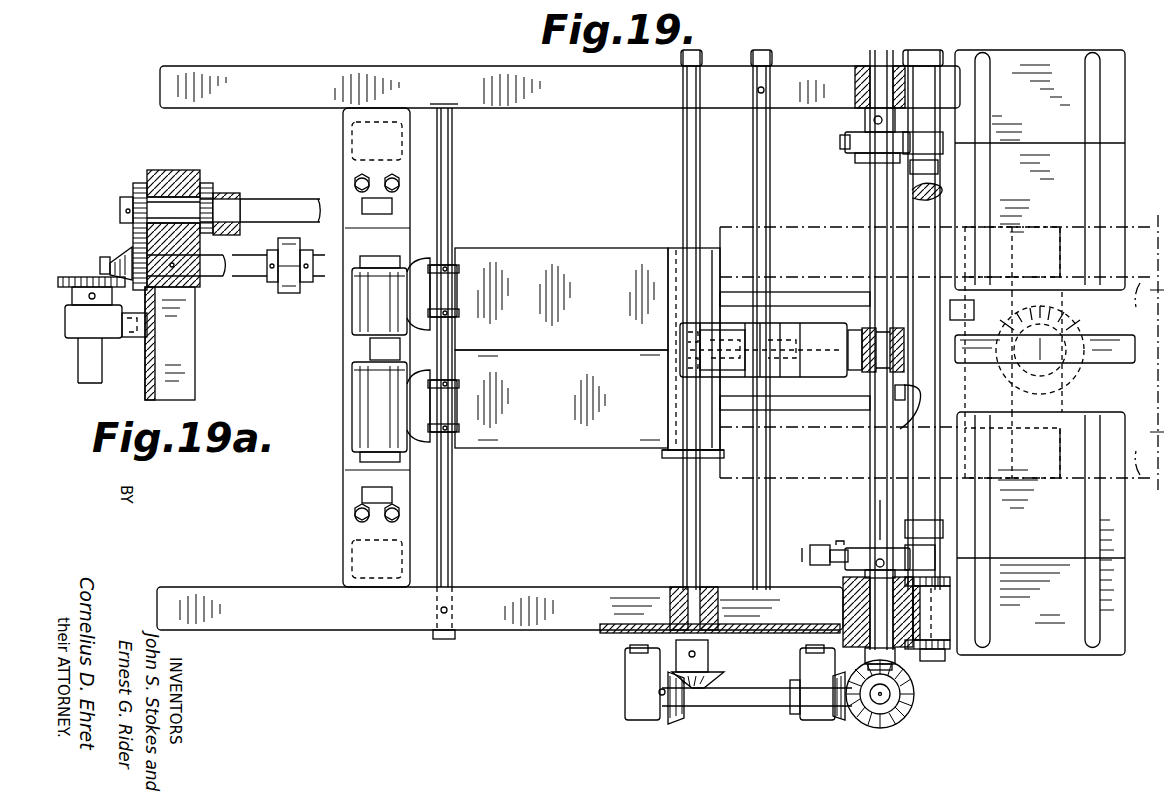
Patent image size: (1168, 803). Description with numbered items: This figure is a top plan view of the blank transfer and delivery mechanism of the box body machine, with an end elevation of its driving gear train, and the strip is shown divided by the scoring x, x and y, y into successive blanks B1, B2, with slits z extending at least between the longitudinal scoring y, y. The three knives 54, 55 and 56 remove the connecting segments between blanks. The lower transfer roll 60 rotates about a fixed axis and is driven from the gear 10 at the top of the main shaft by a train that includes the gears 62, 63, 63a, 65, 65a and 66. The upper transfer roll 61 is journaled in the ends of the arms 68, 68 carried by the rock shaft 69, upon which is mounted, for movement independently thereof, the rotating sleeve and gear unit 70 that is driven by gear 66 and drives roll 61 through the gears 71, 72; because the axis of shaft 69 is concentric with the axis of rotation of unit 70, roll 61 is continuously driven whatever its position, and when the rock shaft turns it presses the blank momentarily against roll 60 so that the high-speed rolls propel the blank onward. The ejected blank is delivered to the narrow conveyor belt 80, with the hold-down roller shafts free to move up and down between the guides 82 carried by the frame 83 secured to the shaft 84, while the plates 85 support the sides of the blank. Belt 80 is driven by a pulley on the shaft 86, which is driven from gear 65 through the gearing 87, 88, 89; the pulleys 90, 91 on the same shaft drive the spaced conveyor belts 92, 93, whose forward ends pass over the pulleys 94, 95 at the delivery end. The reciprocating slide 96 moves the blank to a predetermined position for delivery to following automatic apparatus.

In FIG. 19, the gear 10 is at (1080, 324).
In FIG. 19, the knife 54 is at (968, 252).
In FIG. 19, the knife 55 is at (1050, 228).
In FIG. 19, the knife 56 is at (1008, 274).
In FIG. 19, the lower transfer roll 60 is at (896, 452).
In FIG. 19, the upper transfer roll 61 is at (910, 190).
In FIG. 19, the gear 62 is at (1002, 328).
In FIG. 19, the gear 63 is at (894, 440).
In FIG. 19, the gear 63a is at (880, 438).
In FIG. 19, the gear 65 is at (912, 712).
In FIG. 19A, the gear 65 is at (80, 278).
In FIG. 19, the gear 65a is at (908, 684).
In FIG. 19A, the gear 65a is at (110, 254).
In FIG. 19A, the gear 66 is at (132, 224).
In FIG. 19, the arm 68 is at (860, 172).
In FIG. 19A, the arm 68 is at (242, 188).
In FIG. 19, the rock shaft 69 is at (880, 489).
In FIG. 19A, the rock shaft 69 is at (274, 206).
In FIG. 19, the rotating sleeve and gear unit 70 is at (838, 592).
In FIG. 19A, the rotating sleeve and gear unit 70 is at (146, 172).
In FIG. 19, the gear 71 is at (840, 572).
In FIG. 19A, the gear 71 is at (210, 188).
In FIG. 19, the gear 72 is at (985, 638).
In FIG. 19, the conveyor belt 80 is at (870, 368).
In FIG. 19A, the conveyor belt 80 is at (288, 292).
In FIG. 19, the guide 82 is at (807, 366).
In FIG. 19, the frame 83 is at (796, 334).
In FIG. 19, the shaft 84 is at (759, 510).
In FIG. 19, the strip or plate 85 is at (798, 294).
In FIG. 19, the shaft 86 is at (683, 505).
In FIG. 19, the gear 87 is at (714, 678).
In FIG. 19, the gear 88 is at (676, 706).
In FIG. 19, the gear 89 is at (840, 717).
In FIG. 19, the pulley 90 is at (673, 250).
In FIG. 19, the pulley 91 is at (670, 454).
In FIG. 19, the conveyor belt 92 is at (520, 254).
In FIG. 19, the conveyor belt 93 is at (568, 452).
In FIG. 19, the pulley 94 is at (353, 344).
In FIG. 19, the pulley 95 is at (354, 444).
In FIG. 19, the reciprocating slide 96 is at (354, 386).
In FIG. 19, the blank B1 is at (808, 236).
In FIG. 19, the blank B2 is at (1143, 218).
In FIG. 19, the scoring x is at (1078, 302).
In FIG. 19, the longitudinal scoring y is at (1143, 379).
In FIG. 19, the slit z is at (1040, 350).